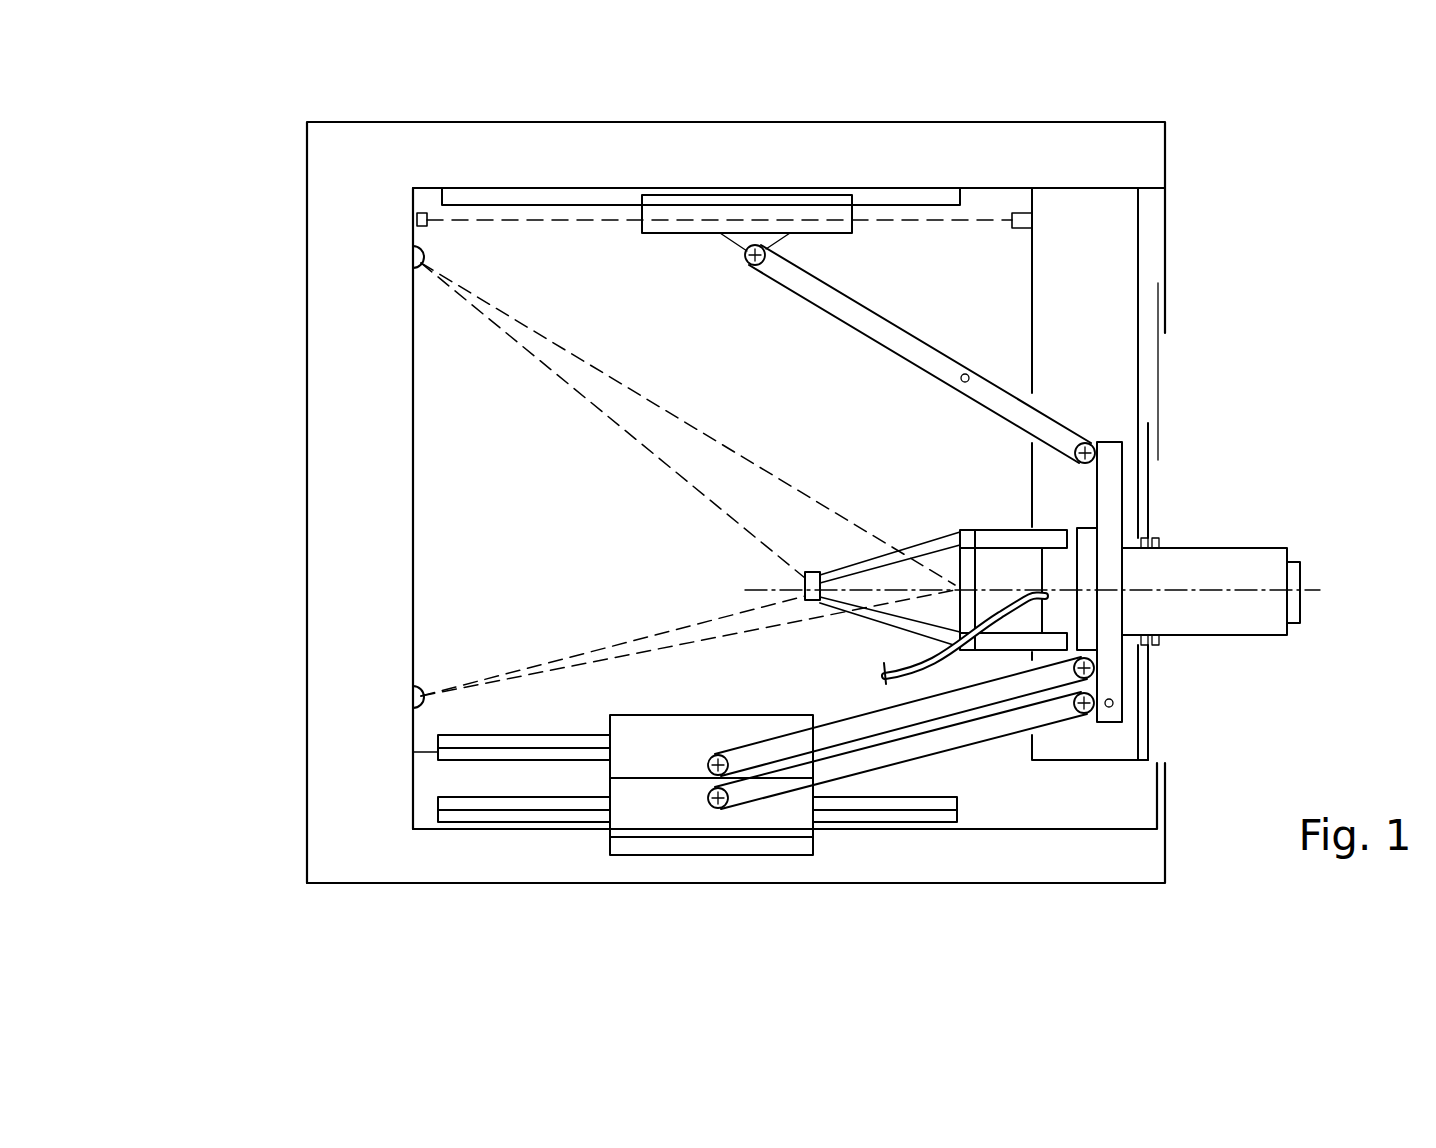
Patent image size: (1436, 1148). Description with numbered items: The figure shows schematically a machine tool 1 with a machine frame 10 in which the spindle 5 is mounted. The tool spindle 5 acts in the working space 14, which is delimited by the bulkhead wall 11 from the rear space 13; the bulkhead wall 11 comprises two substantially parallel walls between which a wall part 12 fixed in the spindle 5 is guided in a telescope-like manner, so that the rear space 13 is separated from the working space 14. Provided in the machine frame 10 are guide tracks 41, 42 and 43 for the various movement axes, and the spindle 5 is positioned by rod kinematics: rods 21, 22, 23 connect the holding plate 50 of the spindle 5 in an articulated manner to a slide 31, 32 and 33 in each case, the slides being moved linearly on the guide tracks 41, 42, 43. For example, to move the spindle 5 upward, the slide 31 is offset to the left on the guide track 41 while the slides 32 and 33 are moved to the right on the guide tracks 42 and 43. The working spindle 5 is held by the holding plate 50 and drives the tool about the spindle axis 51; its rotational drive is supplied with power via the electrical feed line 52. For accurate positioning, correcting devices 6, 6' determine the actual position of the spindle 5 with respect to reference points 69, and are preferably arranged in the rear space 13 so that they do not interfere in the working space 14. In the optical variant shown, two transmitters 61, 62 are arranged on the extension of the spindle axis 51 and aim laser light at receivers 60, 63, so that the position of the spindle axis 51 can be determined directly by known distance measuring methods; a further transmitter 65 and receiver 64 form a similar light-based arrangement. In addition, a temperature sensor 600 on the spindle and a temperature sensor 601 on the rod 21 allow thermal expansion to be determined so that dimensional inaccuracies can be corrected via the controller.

The machine tool 1 is at (258, 384).
The spindle 5 is at (1270, 562).
The correcting device 6 is at (688, 485).
The correcting device 6' is at (719, 136).
The machine frame 10 is at (355, 486).
The bulkhead wall 11 is at (1167, 300).
The wall part 12 is at (1150, 481).
The rear space 13 is at (788, 383).
The working space 14 is at (1395, 387).
The rod 21 is at (904, 336).
The rod 22 is at (895, 753).
The rod 23 is at (850, 735).
The slide 31 is at (731, 210).
The slide 32 is at (673, 812).
The slide 33 is at (623, 758).
The guide track 41 is at (910, 200).
The guide track 42 is at (860, 818).
The guide track 43 is at (490, 755).
The holding plate 50 is at (1106, 666).
The spindle axis 51 is at (1210, 585).
The electrical feed line 52 is at (956, 690).
The receiver 60 is at (410, 704).
The transmitter 61 is at (809, 571).
The transmitter 62 is at (956, 580).
The receiver 63 is at (412, 251).
The receiver 64 is at (1020, 213).
The transmitter 65 is at (421, 213).
The reference point 69 is at (410, 262).
The temperature sensor 600 is at (1112, 709).
The temperature sensor 601 is at (967, 372).